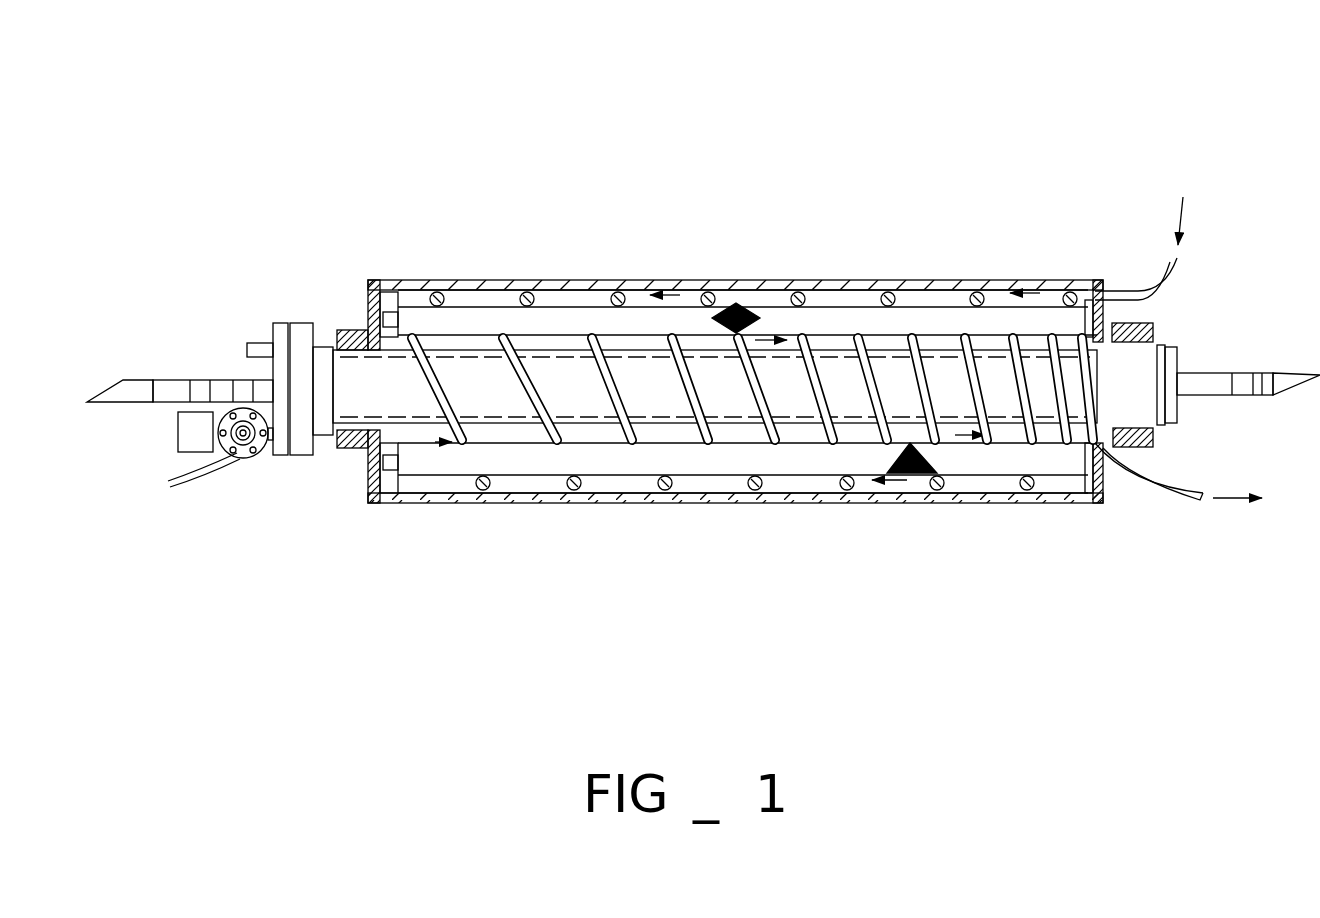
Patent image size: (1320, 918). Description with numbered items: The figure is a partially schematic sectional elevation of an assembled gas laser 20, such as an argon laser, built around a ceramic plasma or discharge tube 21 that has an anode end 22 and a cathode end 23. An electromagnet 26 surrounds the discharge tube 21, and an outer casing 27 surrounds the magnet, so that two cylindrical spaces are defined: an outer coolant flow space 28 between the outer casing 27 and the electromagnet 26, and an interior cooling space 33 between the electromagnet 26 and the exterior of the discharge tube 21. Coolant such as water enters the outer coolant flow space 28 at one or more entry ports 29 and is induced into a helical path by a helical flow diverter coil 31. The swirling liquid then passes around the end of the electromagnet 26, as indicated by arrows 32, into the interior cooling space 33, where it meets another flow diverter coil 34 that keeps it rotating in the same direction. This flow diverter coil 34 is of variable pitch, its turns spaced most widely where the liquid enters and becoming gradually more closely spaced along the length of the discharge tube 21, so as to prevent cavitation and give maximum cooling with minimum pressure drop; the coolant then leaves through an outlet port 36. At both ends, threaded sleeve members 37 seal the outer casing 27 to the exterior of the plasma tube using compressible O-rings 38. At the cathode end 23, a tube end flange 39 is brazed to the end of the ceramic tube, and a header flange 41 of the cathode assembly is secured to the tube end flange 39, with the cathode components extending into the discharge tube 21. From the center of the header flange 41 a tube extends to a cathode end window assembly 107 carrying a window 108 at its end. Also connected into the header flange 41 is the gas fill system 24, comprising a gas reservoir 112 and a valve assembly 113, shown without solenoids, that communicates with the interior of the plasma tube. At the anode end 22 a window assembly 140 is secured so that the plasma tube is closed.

The gas laser 20 is at (808, 208).
The discharge tube 21 is at (661, 400).
The anode end 22 is at (1210, 414).
The cathode end 23 is at (268, 322).
The gas fill system 24 is at (203, 482).
The electromagnet 26 is at (596, 330).
The outer casing 27 is at (420, 280).
The outer coolant flow space 28 is at (845, 295).
The entry port 29 is at (1135, 280).
The helical flow diverter coil 31 is at (540, 292).
The arrows 32 is at (393, 300).
The interior cooling space 33 is at (790, 435).
The variable pitch flow diverter coil 34 is at (813, 403).
The outlet port 36 is at (1145, 490).
The threaded sleeve member 37 is at (347, 328).
The compressible O-ring 38 is at (350, 448).
The tube end flange 39 is at (300, 322).
The header flange 41 is at (280, 456).
The cathode end window assembly 107 is at (153, 385).
The window 108 is at (95, 400).
The gas reservoir 112 is at (178, 440).
The valve assembly 113 is at (240, 458).
The window assembly 140 is at (1253, 373).